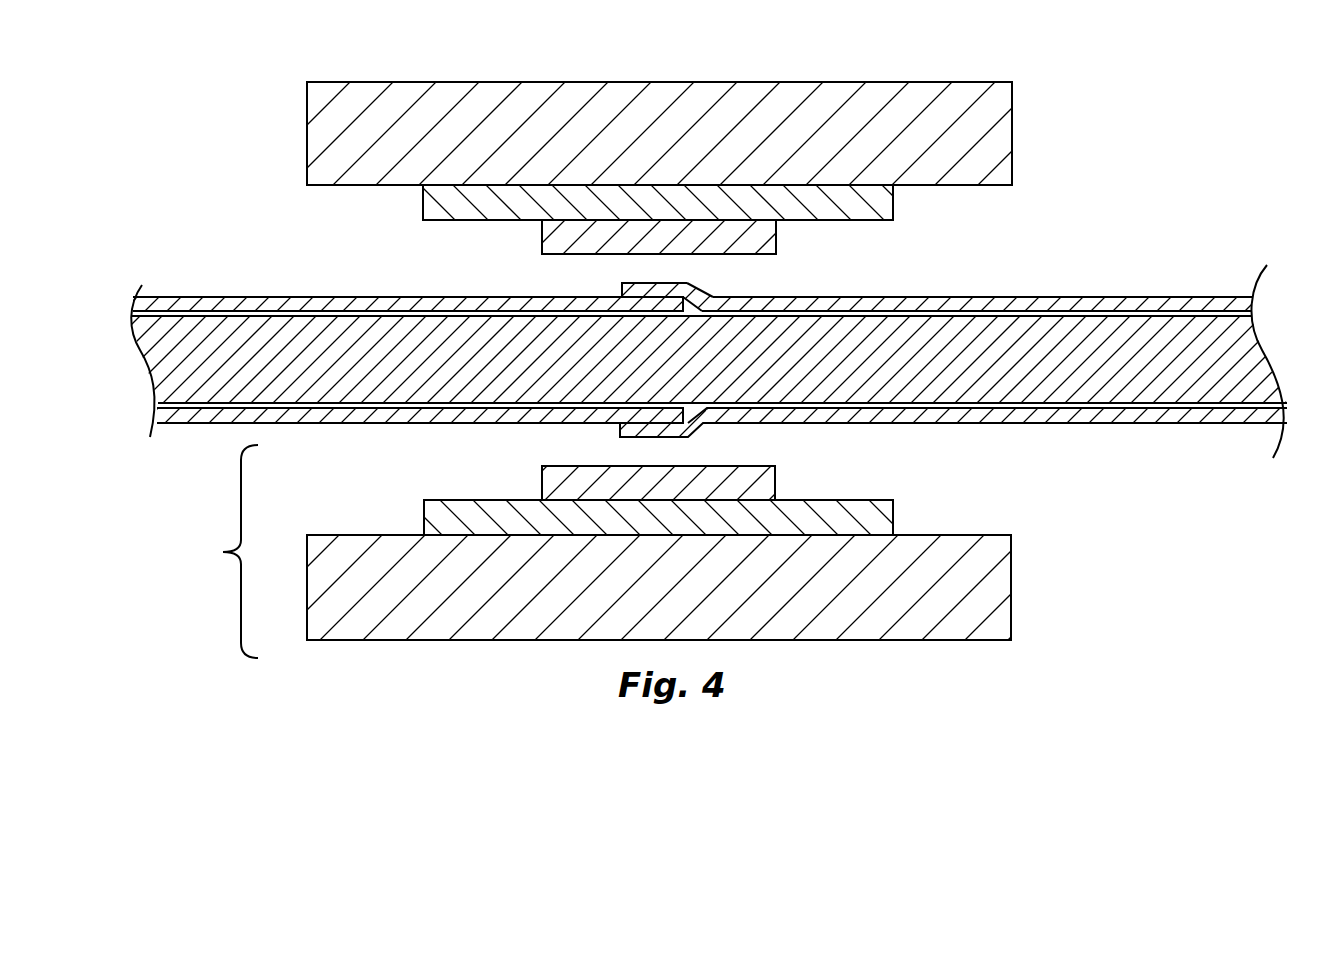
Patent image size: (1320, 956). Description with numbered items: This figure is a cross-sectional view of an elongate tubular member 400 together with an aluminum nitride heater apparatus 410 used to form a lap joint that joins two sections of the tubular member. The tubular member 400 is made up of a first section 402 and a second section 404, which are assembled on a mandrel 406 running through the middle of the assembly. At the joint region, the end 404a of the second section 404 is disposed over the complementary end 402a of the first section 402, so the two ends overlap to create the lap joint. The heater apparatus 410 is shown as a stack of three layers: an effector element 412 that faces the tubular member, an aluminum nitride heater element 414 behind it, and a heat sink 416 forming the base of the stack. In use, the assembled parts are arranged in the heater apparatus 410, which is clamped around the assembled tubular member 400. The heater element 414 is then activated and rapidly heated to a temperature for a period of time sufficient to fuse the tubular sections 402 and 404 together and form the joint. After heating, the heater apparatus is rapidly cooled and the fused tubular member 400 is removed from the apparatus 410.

The tubular member 400 is at (232, 240).
The first section 402 is at (676, 272).
The end of the first section 402a is at (717, 298).
The second section 404 is at (1123, 283).
The end of the second section 404a is at (628, 290).
The mandrel 406 is at (1188, 392).
The aluminum nitride heater apparatus 410 is at (647, 551).
The effector element 412 is at (770, 477).
The aluminum nitride heater element 414 is at (887, 508).
The heat sink 416 is at (1003, 590).